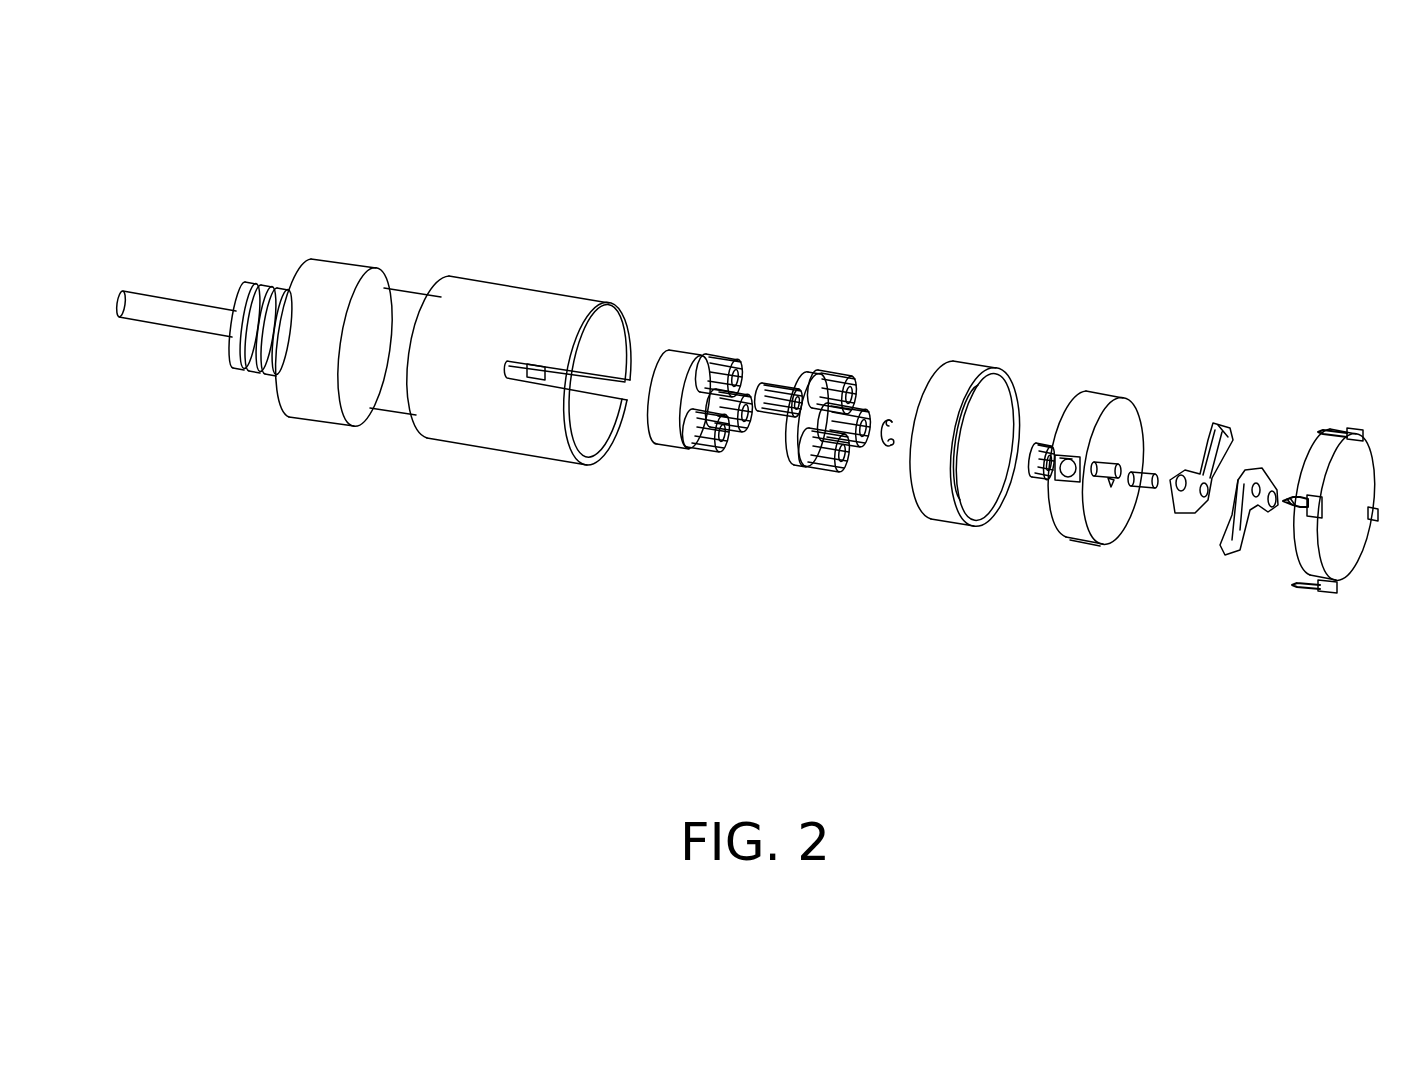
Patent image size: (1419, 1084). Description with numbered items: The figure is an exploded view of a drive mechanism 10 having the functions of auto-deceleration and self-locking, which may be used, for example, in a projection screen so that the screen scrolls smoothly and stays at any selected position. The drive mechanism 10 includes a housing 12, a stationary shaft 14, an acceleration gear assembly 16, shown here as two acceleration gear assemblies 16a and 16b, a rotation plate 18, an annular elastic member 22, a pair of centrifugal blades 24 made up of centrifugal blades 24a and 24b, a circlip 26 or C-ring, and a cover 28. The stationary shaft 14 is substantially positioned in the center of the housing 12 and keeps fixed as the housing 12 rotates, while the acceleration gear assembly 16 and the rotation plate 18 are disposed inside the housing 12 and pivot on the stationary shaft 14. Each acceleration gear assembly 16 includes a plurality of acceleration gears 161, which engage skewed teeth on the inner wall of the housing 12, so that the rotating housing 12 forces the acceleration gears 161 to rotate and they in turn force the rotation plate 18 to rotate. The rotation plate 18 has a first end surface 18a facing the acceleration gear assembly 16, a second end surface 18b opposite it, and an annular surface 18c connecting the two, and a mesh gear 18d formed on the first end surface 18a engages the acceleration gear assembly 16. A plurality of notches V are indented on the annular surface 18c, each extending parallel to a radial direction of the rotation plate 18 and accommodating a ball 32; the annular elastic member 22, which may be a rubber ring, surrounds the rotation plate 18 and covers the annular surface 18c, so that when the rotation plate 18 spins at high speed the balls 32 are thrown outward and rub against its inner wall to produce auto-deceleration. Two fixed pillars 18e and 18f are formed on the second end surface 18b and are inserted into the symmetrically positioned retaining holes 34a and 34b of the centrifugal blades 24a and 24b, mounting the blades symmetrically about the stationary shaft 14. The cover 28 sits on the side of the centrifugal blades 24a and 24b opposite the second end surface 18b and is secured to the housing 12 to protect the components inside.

The drive mechanism 10 is at (1248, 179).
The housing 12 is at (517, 455).
The stationary shaft 14 is at (178, 330).
The acceleration gear assembly 16 is at (796, 459).
The acceleration gear assembly 16a is at (692, 457).
The acceleration gear assembly 16b is at (800, 463).
The acceleration gears 161 is at (737, 360).
The rotation plate 18 is at (1078, 487).
The first end surface 18a is at (1068, 487).
The second end surface 18b is at (1108, 521).
The annular surface 18c is at (1078, 538).
The mesh gear 18d is at (1053, 442).
The fixed pillar 18e is at (1152, 470).
The fixed pillar 18f is at (1120, 462).
The annular elastic member 22 is at (955, 527).
The centrifugal blades 24 is at (1192, 570).
The centrifugal blade 24a is at (1172, 515).
The centrifugal blade 24b is at (1227, 557).
The circlip 26 is at (873, 463).
The cover 28 is at (1318, 592).
The ball 32 is at (1065, 478).
The retaining hole 34a is at (1172, 500).
The retaining hole 34b is at (1290, 492).
The notch V is at (1057, 474).